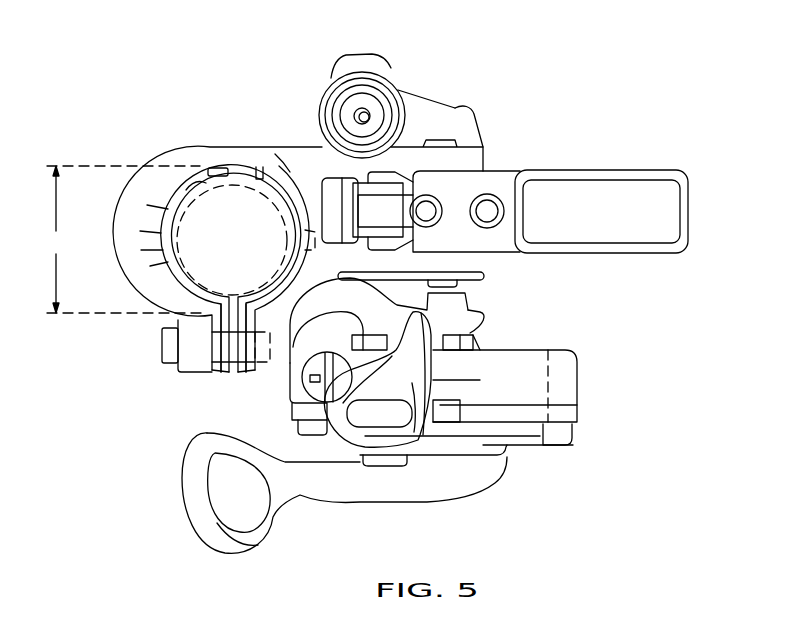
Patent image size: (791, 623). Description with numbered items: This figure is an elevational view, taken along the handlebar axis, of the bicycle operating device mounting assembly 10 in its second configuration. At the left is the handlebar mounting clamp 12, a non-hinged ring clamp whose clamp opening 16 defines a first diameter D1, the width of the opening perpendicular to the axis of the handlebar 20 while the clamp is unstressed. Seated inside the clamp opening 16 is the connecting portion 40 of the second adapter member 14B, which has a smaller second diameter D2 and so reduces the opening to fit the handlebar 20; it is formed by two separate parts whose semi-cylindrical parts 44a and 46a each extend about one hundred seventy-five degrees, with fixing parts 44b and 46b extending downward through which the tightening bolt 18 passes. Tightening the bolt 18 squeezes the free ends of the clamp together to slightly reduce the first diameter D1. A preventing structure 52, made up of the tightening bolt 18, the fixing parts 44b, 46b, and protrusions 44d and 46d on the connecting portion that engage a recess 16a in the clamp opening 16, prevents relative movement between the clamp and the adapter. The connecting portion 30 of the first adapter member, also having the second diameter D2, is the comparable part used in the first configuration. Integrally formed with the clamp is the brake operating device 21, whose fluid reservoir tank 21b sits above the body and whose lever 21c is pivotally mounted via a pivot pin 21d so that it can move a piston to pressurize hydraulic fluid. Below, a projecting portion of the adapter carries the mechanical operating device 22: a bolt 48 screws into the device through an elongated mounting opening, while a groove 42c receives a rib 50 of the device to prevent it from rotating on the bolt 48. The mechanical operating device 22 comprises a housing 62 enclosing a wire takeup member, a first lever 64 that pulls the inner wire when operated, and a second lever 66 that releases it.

The bicycle operating device mounting assembly 10 is at (560, 47).
The handlebar mounting clamp 12 is at (186, 146).
The second adapter member 14B is at (156, 279).
The clamp opening 16 is at (213, 167).
The recess 16a is at (295, 185).
The tightening bolt 18 is at (160, 350).
The handlebar 20 is at (155, 192).
The brake operating device 21 is at (615, 258).
The fluid reservoir tank 21b is at (423, 100).
The lever 21c is at (625, 170).
The pivot pin 21d is at (455, 136).
The mechanical operating device 22 is at (582, 366).
The connecting portion 30 is at (257, 167).
The connecting portion 40 is at (170, 300).
The groove 42c is at (446, 350).
The semi-cylindrical part 44a is at (279, 165).
The fixing part 44b is at (243, 373).
The protrusion 44d is at (310, 248).
The semi-cylindrical part 46a is at (158, 218).
The fixing part 46b is at (222, 373).
The protrusion 46d is at (140, 260).
The bolt 48 is at (467, 297).
The rib 50 is at (487, 315).
The preventing structure 52 is at (164, 410).
The housing 62 is at (563, 388).
The first lever 64 is at (200, 530).
The second lever 66 is at (438, 382).
The first diameter D1 is at (126, 239).
The second diameter D2 is at (270, 202).